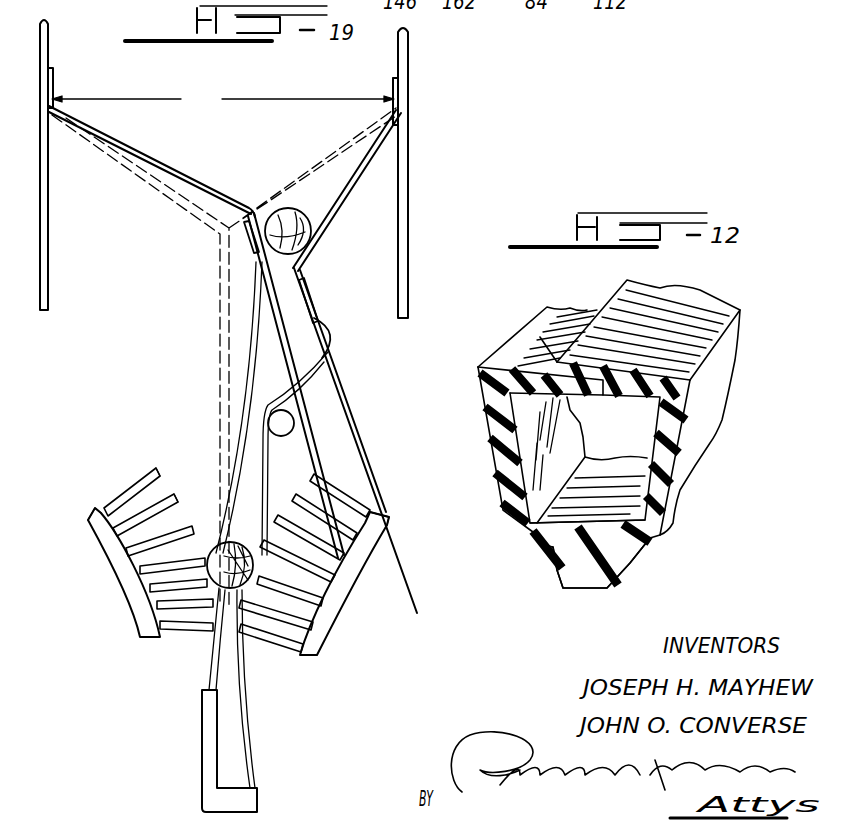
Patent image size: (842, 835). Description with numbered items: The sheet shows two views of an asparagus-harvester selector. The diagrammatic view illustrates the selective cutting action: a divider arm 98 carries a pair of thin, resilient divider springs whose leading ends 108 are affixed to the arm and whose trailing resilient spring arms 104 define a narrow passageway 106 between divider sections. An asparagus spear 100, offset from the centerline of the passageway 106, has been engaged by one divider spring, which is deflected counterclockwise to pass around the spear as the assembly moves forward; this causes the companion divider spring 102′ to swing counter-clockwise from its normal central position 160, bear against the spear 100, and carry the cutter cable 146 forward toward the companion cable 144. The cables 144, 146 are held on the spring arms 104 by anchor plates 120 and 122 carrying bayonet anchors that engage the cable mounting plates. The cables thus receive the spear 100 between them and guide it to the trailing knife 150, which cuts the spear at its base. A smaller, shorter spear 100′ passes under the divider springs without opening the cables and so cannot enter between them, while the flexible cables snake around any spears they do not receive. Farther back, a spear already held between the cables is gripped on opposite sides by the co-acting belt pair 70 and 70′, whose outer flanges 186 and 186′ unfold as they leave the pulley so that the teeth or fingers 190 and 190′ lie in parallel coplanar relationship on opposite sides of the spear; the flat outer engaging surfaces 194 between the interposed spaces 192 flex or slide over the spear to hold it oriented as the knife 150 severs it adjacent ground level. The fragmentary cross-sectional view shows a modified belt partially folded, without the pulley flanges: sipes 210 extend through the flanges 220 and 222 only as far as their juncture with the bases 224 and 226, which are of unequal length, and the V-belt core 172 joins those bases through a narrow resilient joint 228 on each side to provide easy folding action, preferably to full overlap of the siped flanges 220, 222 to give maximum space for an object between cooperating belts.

In FIG. 19, the divider arm 98 is at (48, 60).
In FIG. 19, the leading ends of the divider springs 108 is at (393, 82).
In FIG. 19, the passageway 106 is at (223, 99).
In FIG. 19, the divider spring 102′ is at (150, 158).
In FIG. 19, the normal central position 160 is at (168, 202).
In FIG. 19, the asparagus spear 100 is at (275, 218).
In FIG. 19, the anchor plate 122 is at (237, 243).
In FIG. 19, the spring arm 104 is at (287, 357).
In FIG. 19, the anchor plate 120 is at (318, 305).
In FIG. 19, the flexible cable 144 is at (333, 348).
In FIG. 19, the cutter cable 146 is at (257, 320).
In FIG. 19, the smaller spear 100′ is at (287, 420).
In FIG. 19, the belt 70 is at (129, 616).
In FIG. 19, the teeth or fingers 190 is at (133, 497).
In FIG. 19, the flat outer engaging surfaces 194 is at (153, 473).
In FIG. 19, the notches or spaces 192 is at (170, 499).
In FIG. 19, the outer flange 186 is at (95, 520).
In FIG. 19, the belt 70′ is at (335, 611).
In FIG. 19, the teeth or fingers 190′ is at (357, 507).
In FIG. 19, the outer flange 186′ is at (389, 521).
In FIG. 19, the knife 150 is at (213, 800).
In FIG. 12, the sipes 210 is at (667, 303).
In FIG. 12, the flange 220 is at (558, 313).
In FIG. 12, the flange 222 is at (740, 310).
In FIG. 12, the base 224 is at (505, 481).
In FIG. 12, the base 226 is at (660, 483).
In FIG. 12, the narrow resilient joint 228 is at (527, 533).
In FIG. 12, the core 172 is at (620, 570).